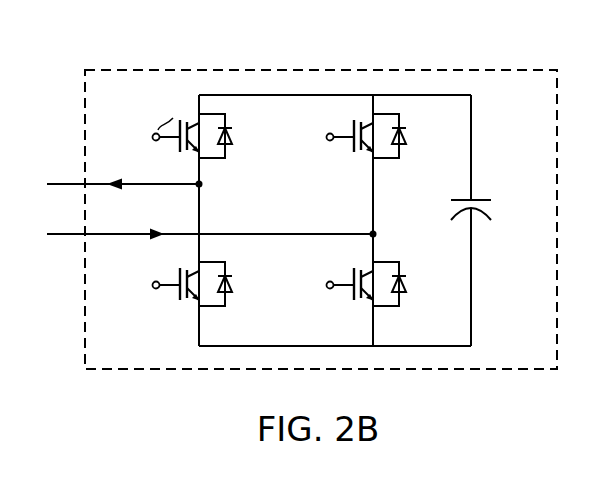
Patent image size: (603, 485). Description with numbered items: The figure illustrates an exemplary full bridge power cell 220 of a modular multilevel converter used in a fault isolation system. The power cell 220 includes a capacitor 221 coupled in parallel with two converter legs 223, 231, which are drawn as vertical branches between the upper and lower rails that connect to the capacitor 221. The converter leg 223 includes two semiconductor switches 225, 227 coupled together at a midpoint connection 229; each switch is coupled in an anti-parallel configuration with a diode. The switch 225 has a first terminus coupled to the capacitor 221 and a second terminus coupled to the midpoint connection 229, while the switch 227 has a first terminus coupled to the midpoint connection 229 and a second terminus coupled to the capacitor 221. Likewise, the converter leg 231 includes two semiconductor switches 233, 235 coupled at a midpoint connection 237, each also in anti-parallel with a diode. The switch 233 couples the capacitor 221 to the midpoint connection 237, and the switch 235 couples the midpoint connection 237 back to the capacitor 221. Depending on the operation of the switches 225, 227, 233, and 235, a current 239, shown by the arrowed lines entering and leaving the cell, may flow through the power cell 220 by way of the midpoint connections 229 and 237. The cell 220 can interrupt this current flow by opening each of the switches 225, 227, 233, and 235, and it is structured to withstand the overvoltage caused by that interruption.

The full bridge power cell 220 is at (557, 70).
The capacitor 221 is at (471, 93).
The converter leg 223 is at (373, 93).
The semiconductor switch 225 is at (364, 157).
The semiconductor switch 227 is at (353, 299).
The midpoint connection 229 is at (377, 234).
The converter leg 231 is at (199, 93).
The semiconductor switch 233 is at (191, 157).
The semiconductor switch 235 is at (179, 299).
The midpoint connection 237 is at (203, 184).
The current 239 is at (113, 181).